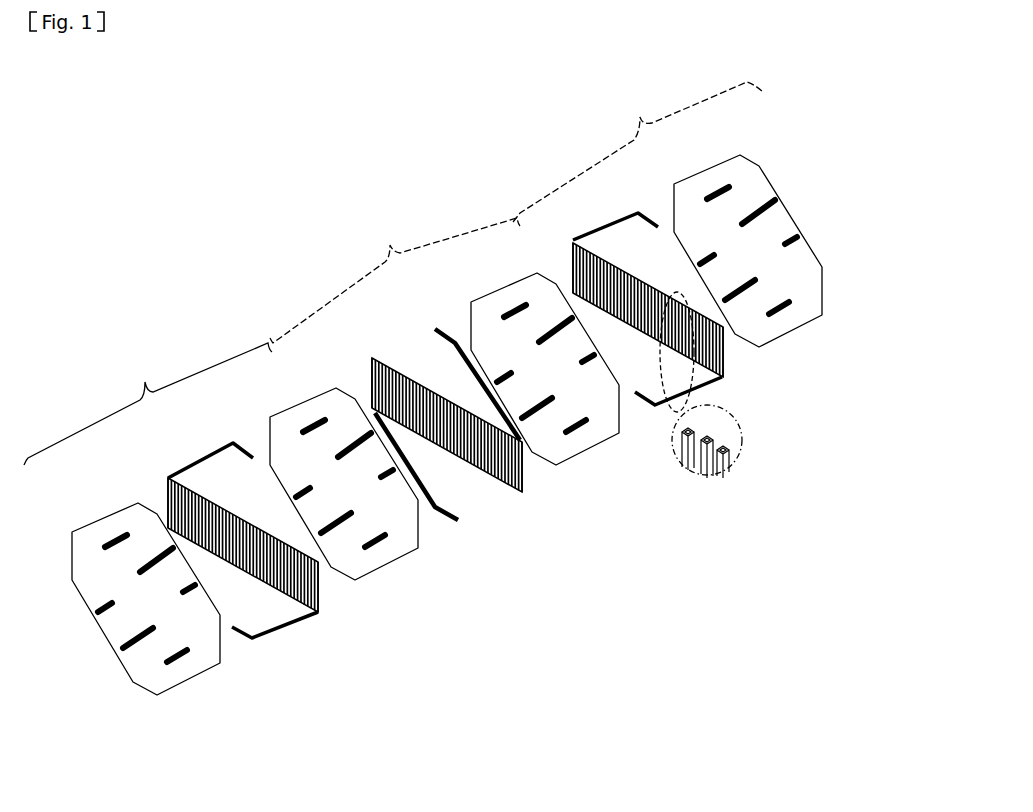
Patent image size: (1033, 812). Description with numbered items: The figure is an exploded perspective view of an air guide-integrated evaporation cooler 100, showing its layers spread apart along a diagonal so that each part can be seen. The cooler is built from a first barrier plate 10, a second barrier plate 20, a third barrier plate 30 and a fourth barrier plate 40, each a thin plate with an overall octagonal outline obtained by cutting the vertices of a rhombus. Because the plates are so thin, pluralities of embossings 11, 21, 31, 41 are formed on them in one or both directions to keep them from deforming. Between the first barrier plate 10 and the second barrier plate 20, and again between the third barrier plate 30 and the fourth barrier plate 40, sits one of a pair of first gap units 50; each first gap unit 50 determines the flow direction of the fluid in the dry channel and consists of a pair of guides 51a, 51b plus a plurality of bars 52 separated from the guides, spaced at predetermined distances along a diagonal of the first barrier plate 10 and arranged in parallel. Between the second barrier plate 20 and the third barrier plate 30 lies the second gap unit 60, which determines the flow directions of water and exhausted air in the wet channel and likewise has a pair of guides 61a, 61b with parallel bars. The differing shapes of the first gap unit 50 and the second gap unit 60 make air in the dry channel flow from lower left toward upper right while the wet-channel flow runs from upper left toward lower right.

The air guide-integrated evaporation cooler 100 is at (346, 226).
The first barrier plate 10 is at (149, 627).
The embossings 11 is at (180, 668).
The second barrier plate 20 is at (348, 512).
The embossings 21 is at (344, 528).
The third barrier plate 30 is at (549, 397).
The embossings 31 is at (545, 413).
The fourth barrier plate 40 is at (754, 279).
The embossings 41 is at (748, 295).
The first gap unit 50 is at (478, 464).
The guide 51a is at (226, 442).
The guide 51b is at (262, 642).
The bars 52 is at (727, 460).
The second gap unit 60 is at (480, 430).
The guide 61a is at (448, 340).
The guide 61b is at (460, 522).